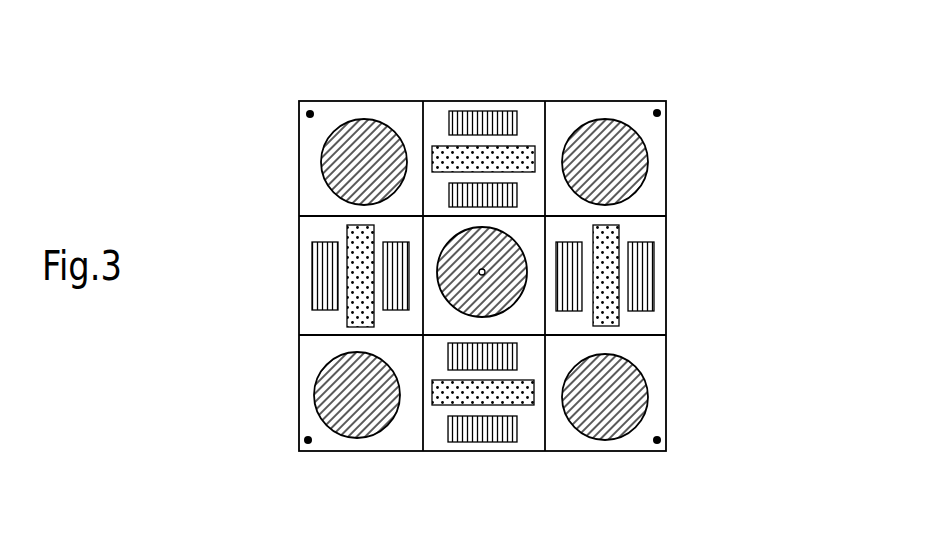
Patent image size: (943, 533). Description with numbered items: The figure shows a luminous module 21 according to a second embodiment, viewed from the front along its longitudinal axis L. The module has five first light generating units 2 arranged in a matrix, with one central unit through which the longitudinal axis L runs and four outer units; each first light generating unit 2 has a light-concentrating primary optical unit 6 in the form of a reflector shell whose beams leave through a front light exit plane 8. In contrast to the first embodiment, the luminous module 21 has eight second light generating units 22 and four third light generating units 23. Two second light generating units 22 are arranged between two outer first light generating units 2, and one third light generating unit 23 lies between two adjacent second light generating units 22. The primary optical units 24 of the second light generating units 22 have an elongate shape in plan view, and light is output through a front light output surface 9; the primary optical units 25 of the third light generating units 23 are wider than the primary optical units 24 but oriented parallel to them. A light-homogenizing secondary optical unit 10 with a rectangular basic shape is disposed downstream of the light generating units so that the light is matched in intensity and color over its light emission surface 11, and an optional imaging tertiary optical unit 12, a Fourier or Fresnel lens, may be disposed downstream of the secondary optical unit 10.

The luminous module 21 is at (706, 154).
The secondary optical unit 10 is at (368, 112).
The light emission surface 11 is at (331, 113).
The tertiary optical unit 12 is at (312, 421).
The first light generating unit 2 is at (605, 129).
The primary optical unit 6 is at (605, 129).
The light exit plane 8 is at (602, 140).
The longitudinal axis L is at (500, 256).
The second light generating unit 22 is at (536, 272).
The primary optical unit 24 is at (536, 272).
The light output surface 9 is at (465, 115).
The third light generating unit 23 is at (488, 231).
The primary optical unit 25 is at (527, 148).